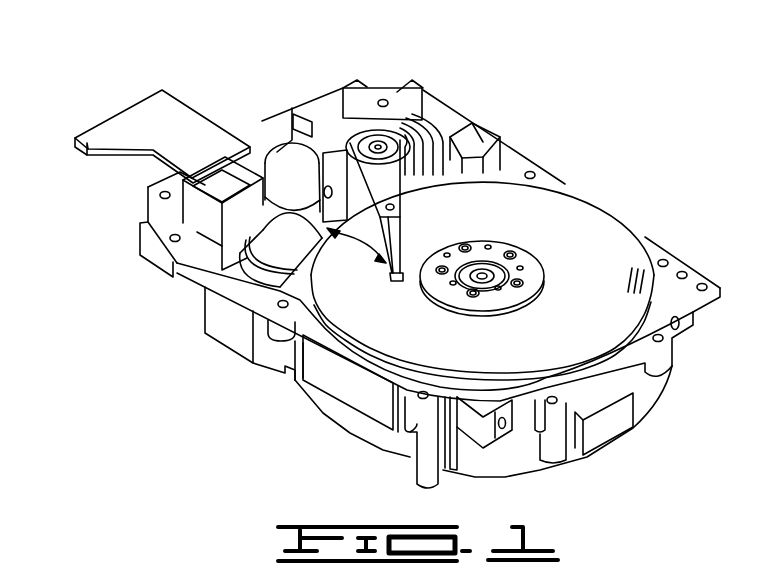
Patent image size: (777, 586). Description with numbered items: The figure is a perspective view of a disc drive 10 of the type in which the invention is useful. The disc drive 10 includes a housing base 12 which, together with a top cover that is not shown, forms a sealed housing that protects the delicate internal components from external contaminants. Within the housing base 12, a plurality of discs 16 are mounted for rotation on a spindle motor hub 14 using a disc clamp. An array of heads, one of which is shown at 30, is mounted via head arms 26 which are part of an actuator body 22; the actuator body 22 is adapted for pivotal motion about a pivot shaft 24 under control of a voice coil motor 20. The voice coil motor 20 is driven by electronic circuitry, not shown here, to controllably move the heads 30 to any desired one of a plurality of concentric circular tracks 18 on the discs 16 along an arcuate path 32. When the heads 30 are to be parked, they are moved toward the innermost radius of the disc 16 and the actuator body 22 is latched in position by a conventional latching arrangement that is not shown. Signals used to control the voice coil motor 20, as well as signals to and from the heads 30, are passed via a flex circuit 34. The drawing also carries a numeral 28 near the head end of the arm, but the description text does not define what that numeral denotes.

The disc drive 10 is at (140, 87).
The housing base 12 is at (328, 414).
The spindle motor hub 14 is at (503, 271).
The discs 16 is at (563, 206).
The concentric circular tracks 18 is at (643, 270).
The voice coil motor 20 is at (428, 82).
The actuator body 22 is at (347, 138).
The pivot shaft 24 is at (405, 132).
The head arms 26 is at (393, 187).
The read/write head 28 is at (392, 279).
The heads 30 is at (401, 281).
The arcuate path 32 is at (360, 256).
The flex circuit 34 is at (284, 160).